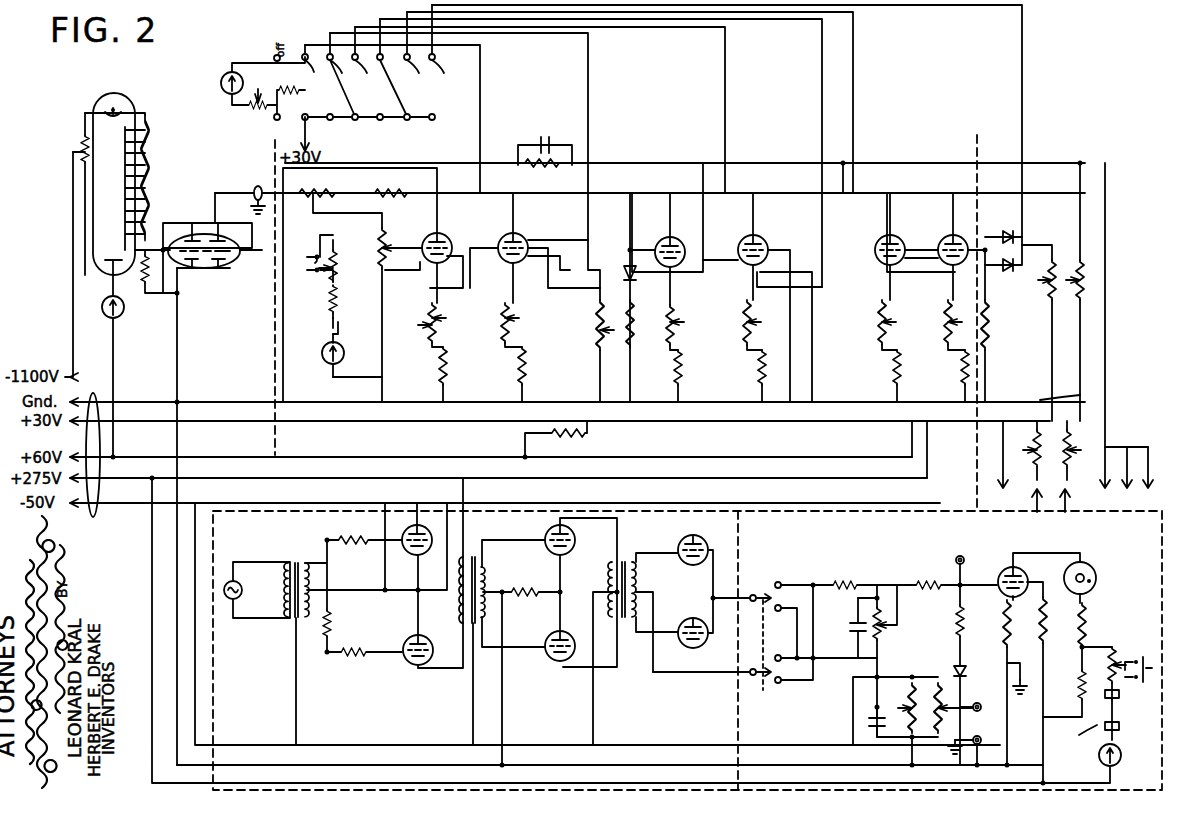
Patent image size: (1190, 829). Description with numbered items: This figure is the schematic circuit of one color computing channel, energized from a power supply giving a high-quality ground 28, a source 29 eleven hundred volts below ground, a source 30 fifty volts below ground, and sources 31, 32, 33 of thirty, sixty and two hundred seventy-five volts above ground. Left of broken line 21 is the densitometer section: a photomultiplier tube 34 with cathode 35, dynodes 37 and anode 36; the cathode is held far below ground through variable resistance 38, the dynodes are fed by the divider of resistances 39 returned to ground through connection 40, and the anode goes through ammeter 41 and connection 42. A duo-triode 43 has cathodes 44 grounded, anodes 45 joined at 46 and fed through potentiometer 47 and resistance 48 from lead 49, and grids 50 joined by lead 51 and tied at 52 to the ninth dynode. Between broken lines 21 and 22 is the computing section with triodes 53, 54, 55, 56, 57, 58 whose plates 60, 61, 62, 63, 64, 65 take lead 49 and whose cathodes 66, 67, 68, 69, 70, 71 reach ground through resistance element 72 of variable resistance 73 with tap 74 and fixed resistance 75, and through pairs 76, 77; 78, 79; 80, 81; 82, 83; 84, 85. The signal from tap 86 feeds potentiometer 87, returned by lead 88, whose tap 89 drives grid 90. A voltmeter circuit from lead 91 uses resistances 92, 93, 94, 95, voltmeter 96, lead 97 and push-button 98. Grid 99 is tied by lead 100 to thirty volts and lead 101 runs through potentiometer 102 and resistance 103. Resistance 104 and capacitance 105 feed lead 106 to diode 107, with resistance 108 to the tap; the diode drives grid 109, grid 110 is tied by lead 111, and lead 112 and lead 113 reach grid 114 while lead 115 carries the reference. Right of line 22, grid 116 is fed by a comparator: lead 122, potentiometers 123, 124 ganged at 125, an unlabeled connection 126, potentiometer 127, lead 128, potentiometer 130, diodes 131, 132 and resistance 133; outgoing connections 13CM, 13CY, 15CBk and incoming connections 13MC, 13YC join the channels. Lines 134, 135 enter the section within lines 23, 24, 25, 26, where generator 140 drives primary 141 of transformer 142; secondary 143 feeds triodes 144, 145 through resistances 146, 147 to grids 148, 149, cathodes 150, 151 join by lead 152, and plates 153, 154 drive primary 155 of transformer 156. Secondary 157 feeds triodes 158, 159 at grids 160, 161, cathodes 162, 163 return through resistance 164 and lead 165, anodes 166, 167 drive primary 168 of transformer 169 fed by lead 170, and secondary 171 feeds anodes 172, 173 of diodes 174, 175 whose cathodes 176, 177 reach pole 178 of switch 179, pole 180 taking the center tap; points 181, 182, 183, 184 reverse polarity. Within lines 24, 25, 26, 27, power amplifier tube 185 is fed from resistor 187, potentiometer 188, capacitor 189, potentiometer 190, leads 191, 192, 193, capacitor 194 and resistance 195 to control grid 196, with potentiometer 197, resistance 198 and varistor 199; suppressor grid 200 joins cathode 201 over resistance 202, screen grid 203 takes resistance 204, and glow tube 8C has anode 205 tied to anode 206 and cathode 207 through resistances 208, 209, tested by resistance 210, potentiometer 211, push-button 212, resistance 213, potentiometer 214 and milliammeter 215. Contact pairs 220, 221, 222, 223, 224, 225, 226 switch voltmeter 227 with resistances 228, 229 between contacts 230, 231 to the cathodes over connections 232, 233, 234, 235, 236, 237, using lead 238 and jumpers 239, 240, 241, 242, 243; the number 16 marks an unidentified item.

The photomultiplier tube 34 is at (133, 103).
The photosensitive cathode 35 is at (106, 112).
The anode 36 is at (113, 275).
The dynodes 37 is at (123, 188).
The variable resistance 38 is at (78, 148).
The fixed resistances 39 is at (150, 129).
The connection 40 is at (178, 354).
The ammeter 41 is at (123, 314).
The connection 42 is at (114, 364).
The duo-triode tube 43 is at (218, 268).
The cathodes 44 is at (146, 275).
The anodes 45 is at (172, 222).
The anode junction 46 is at (258, 193).
The potentiometer 47 is at (328, 198).
The fixed resistance 48 is at (388, 198).
The lead 49 is at (367, 165).
The grids 50 is at (200, 230).
The lead 51 is at (215, 193).
The connection 52 is at (160, 250).
The triode vacuum tube 53 is at (433, 230).
The triode vacuum tube 54 is at (527, 232).
The triode vacuum tube 55 is at (668, 232).
The triode vacuum tube 56 is at (764, 232).
The triode vacuum tube 57 is at (883, 242).
The triode section 58 is at (947, 232).
The plate 60 is at (445, 230).
The plate 61 is at (499, 230).
The plate 62 is at (676, 232).
The plate 63 is at (749, 232).
The plate 64 is at (897, 232).
The plate 65 is at (957, 232).
The cathode 66 is at (444, 276).
The cathode 67 is at (505, 280).
The cathode 68 is at (668, 291).
The cathode 69 is at (748, 283).
The cathode 70 is at (940, 262).
The cathode 71 is at (921, 237).
The resistance element 72 is at (437, 312).
The variable resistance 73 is at (418, 328).
The movable tap 74 is at (448, 324).
The fixed resistance 75 is at (452, 358).
The variable resistance 76 is at (508, 312).
The fixed resistance 77 is at (524, 360).
The variable resistance 78 is at (674, 318).
The fixed resistance 79 is at (682, 356).
The variable resistance 80 is at (754, 314).
The fixed resistance 81 is at (758, 370).
The variable resistance 82 is at (891, 307).
The fixed resistance 83 is at (888, 375).
The variable resistance 84 is at (956, 307).
The fixed resistance 85 is at (963, 381).
The movable tap 86 is at (327, 207).
The potentiometer 87 is at (380, 246).
The lead 88 is at (386, 314).
The movable tap 89 is at (386, 239).
The grid 90 is at (402, 258).
The lead 91 is at (405, 282).
The fixed resistance 92 is at (345, 272).
The resistance 93 is at (326, 290).
The fixed resistance 94 is at (344, 300).
The resistance 95 is at (327, 328).
The voltmeter 96 is at (346, 348).
The lead 97 is at (353, 380).
The push-button 98 is at (302, 256).
The grid 99 is at (558, 231).
The lead 100 is at (564, 262).
The lead 101 is at (557, 261).
The potentiometer 102 is at (589, 337).
The fixed resistance 103 is at (592, 435).
The resistance 104 is at (564, 175).
The capacitance 105 is at (545, 138).
The lead 106 is at (598, 160).
The diode 107 is at (624, 268).
The resistance 108 is at (645, 323).
The grid 109 is at (645, 237).
The grid 110 is at (772, 248).
The lead 111 is at (812, 335).
The lead 112 is at (680, 160).
The lead 113 is at (822, 276).
The grid 114 is at (808, 269).
The lead 115 is at (812, 320).
The grid 116 is at (985, 256).
The lead 122 is at (1080, 195).
The potentiometer 123 is at (1020, 450).
The potentiometer 124 is at (1070, 452).
The ganged connection 125 is at (1034, 506).
The lead 126 is at (1052, 376).
The potentiometer 127 is at (1049, 333).
The lead 128 is at (1045, 398).
The potentiometer 130 is at (1092, 264).
The diode 131 is at (1010, 225).
The diode 132 is at (1002, 288).
The resistance 133 is at (990, 338).
The line 134 is at (912, 440).
The line 135 is at (930, 442).
The signal generator 140 is at (231, 612).
The primary winding 141 is at (285, 597).
The interstage transformer 142 is at (294, 561).
The secondary winding 143 is at (327, 540).
The triode 144 is at (410, 511).
The triode 145 is at (413, 672).
The resistance 146 is at (366, 540).
The resistance 147 is at (358, 657).
The grid 148 is at (404, 557).
The grid 149 is at (404, 643).
The cathode 150 is at (419, 560).
The cathode 151 is at (420, 637).
The lead 152 is at (341, 597).
The plate 153 is at (446, 502).
The plate 154 is at (419, 670).
The primary winding 155 is at (468, 557).
The interstage transformer 156 is at (491, 546).
The secondary winding 157 is at (490, 579).
The triode 158 is at (554, 535).
The triode 159 is at (557, 668).
The grid 160 is at (574, 542).
The grid 161 is at (545, 660).
The cathode 162 is at (562, 561).
The cathode 163 is at (562, 632).
The resistance 164 is at (521, 598).
The lead 165 is at (507, 725).
The anode 166 is at (574, 546).
The anode 167 is at (563, 675).
The primary winding 168 is at (618, 562).
The interstage transformer 169 is at (636, 560).
The lead 170 is at (590, 707).
The secondary 171 is at (640, 593).
The anode 172 is at (692, 543).
The anode 173 is at (684, 634).
The vacuum tube diode 174 is at (719, 548).
The vacuum tube diode 175 is at (678, 657).
The cathode 176 is at (716, 557).
The cathode 177 is at (713, 599).
The pole 178 is at (753, 595).
The double-pole double-throw switch 179 is at (745, 636).
The pole 180 is at (747, 682).
The switch point 181 is at (781, 585).
The switch point 182 is at (820, 649).
The switch point 183 is at (796, 612).
The switch point 184 is at (782, 683).
The power amplifier tube 185 is at (1013, 568).
The fixed resistor 187 is at (845, 582).
The potentiometer 188 is at (880, 603).
The capacitor 189 is at (854, 628).
The potentiometer 190 is at (906, 681).
The lead 191 is at (912, 763).
The lead 192 is at (853, 694).
The lead 193 is at (877, 668).
The capacitor 194 is at (869, 730).
The resistance 195 is at (922, 582).
The control grid 196 is at (1002, 604).
The potentiometer 197 is at (938, 682).
The fixed resistance 198 is at (954, 618).
The varistor 199 is at (964, 678).
The suppressor grid 200 is at (971, 659).
The cathode 201 is at (1008, 598).
The resistance 202 is at (1008, 625).
The screen grid 203 is at (1027, 576).
The resistance 204 is at (1044, 622).
The anode 205 is at (1090, 562).
The anode 206 is at (1027, 554).
The cathode 207 is at (1091, 585).
The fixed resistance 208 is at (1088, 632).
The fixed resistance 209 is at (1082, 682).
The fixed resistance 210 is at (1110, 648).
The potentiometer 211 is at (1118, 686).
The push-button 212 is at (1130, 662).
The fixed resistance 213 is at (1092, 724).
The potentiometer 214 is at (1118, 722).
The milliammeter 215 is at (1122, 748).
The contact points 220 is at (275, 58).
The contact points 221 is at (315, 84).
The contact points 222 is at (357, 76).
The contact points 223 is at (364, 96).
The contact points 224 is at (409, 76).
The contact points 225 is at (417, 96).
The contact points 226 is at (451, 86).
The voltmeter 227 is at (222, 74).
The variable resistance 228 is at (248, 112).
The fixed resistance 229 is at (275, 83).
The movable contact 230 is at (304, 56).
The movable contact 231 is at (282, 136).
The connection 232 is at (480, 99).
The connection 233 is at (588, 99).
The connection 234 is at (725, 99).
The connection 235 is at (822, 118).
The connection 236 is at (854, 99).
The connection 237 is at (1022, 89).
The lead 238 is at (328, 147).
The jumper connection 239 is at (327, 129).
The jumper 240 is at (361, 137).
The jumper 241 is at (397, 129).
The jumper 242 is at (427, 137).
The jumper 243 is at (457, 127).
The broken line 21 is at (272, 304).
The broken line 22 is at (977, 144).
The broken line 23 is at (215, 555).
The broken line 24 is at (276, 511).
The broken line 25 is at (737, 538).
The broken line 26 is at (374, 783).
The broken line 27 is at (1156, 590).
The ground 28 is at (128, 402).
The source 29 is at (73, 377).
The source 30 is at (102, 502).
The source 31 is at (123, 420).
The source 32 is at (126, 459).
The source 33 is at (144, 478).
The indicator 16 is at (997, 445).
The outgoing connection 13CM is at (1110, 416).
The outgoing connection 13CY is at (1125, 427).
The outgoing connection 15CBk is at (1147, 444).
The incoming connection 13MC is at (1007, 461).
The incoming connection 13YC is at (1066, 493).
The glow tube 8C is at (1096, 562).